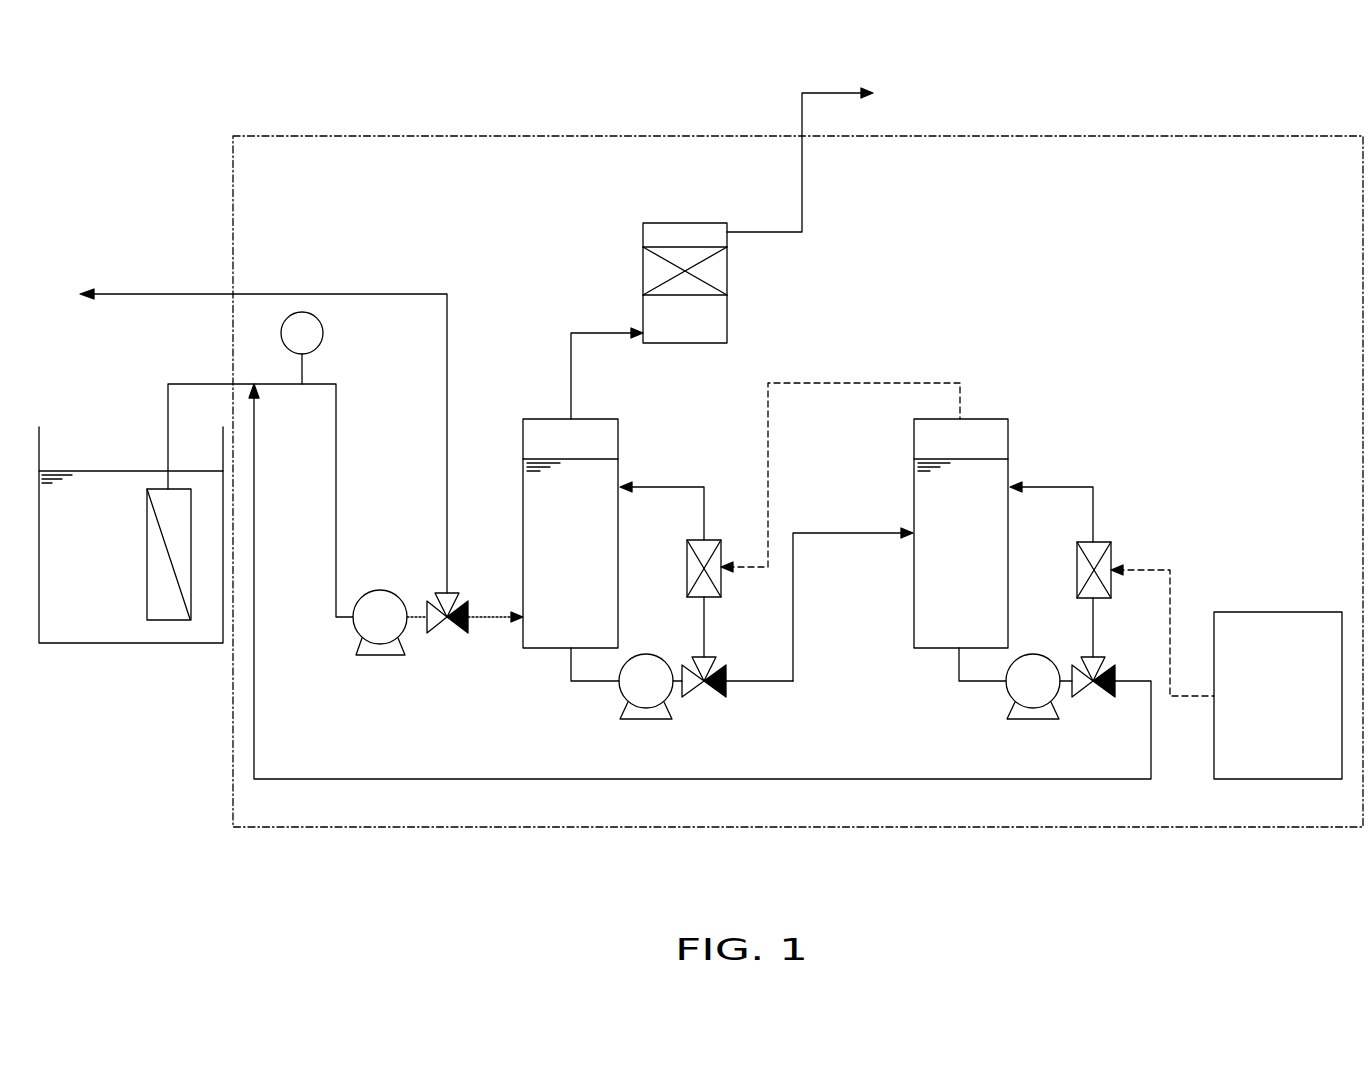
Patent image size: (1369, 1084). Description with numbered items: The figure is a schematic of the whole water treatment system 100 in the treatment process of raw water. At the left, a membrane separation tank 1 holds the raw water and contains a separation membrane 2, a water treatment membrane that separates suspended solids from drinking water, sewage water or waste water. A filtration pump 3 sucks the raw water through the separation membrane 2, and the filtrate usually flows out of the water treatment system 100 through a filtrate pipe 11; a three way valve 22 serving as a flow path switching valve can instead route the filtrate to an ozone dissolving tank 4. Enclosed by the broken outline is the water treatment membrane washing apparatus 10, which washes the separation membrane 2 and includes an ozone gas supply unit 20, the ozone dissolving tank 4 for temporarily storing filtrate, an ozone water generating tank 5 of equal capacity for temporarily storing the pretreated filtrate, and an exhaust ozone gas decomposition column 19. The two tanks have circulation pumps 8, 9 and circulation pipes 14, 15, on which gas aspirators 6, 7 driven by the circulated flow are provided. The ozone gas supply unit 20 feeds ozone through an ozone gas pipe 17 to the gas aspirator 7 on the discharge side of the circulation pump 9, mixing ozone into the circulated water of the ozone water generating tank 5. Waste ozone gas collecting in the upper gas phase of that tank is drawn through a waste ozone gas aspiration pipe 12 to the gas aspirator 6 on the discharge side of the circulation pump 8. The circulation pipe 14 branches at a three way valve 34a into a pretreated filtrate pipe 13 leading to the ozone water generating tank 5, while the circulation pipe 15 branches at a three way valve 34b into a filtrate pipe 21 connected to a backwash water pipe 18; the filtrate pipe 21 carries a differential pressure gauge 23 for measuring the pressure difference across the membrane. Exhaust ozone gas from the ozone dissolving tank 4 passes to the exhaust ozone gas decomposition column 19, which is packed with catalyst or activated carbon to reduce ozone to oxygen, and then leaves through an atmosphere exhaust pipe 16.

The water treatment system 100 is at (740, 70).
The water treatment membrane washing apparatus 10 is at (228, 210).
The membrane separation tank 1 is at (93, 645).
The separation membrane 2 is at (168, 622).
The filtration pump 3 is at (390, 590).
The ozone dissolving tank 4 is at (540, 415).
The ozone water generating tank 5 is at (992, 419).
The gas aspirator 6 is at (712, 540).
The gas aspirator 7 is at (1105, 542).
The circulation pump 8 is at (620, 690).
The circulation pump 9 is at (1008, 700).
The filtrate pipe 11 is at (380, 294).
The waste ozone gas aspiration pipe 12 is at (908, 383).
The pretreated filtrate pipe 13 is at (795, 655).
The circulation pipe 14 is at (660, 487).
The circulation pipe 15 is at (1050, 487).
The atmosphere exhaust pipe 16 is at (802, 200).
The ozone gas pipe 17 is at (1172, 580).
The backwash water pipe 18 is at (255, 740).
The exhaust ozone gas decomposition column 19 is at (643, 240).
The ozone gas supply unit 20 is at (1278, 612).
The filtrate pipe 21 is at (177, 384).
The three way valve 22 is at (443, 630).
The differential pressure gauge 23 is at (324, 335).
The three way valve 34a is at (723, 700).
The three way valve 34b is at (1100, 700).